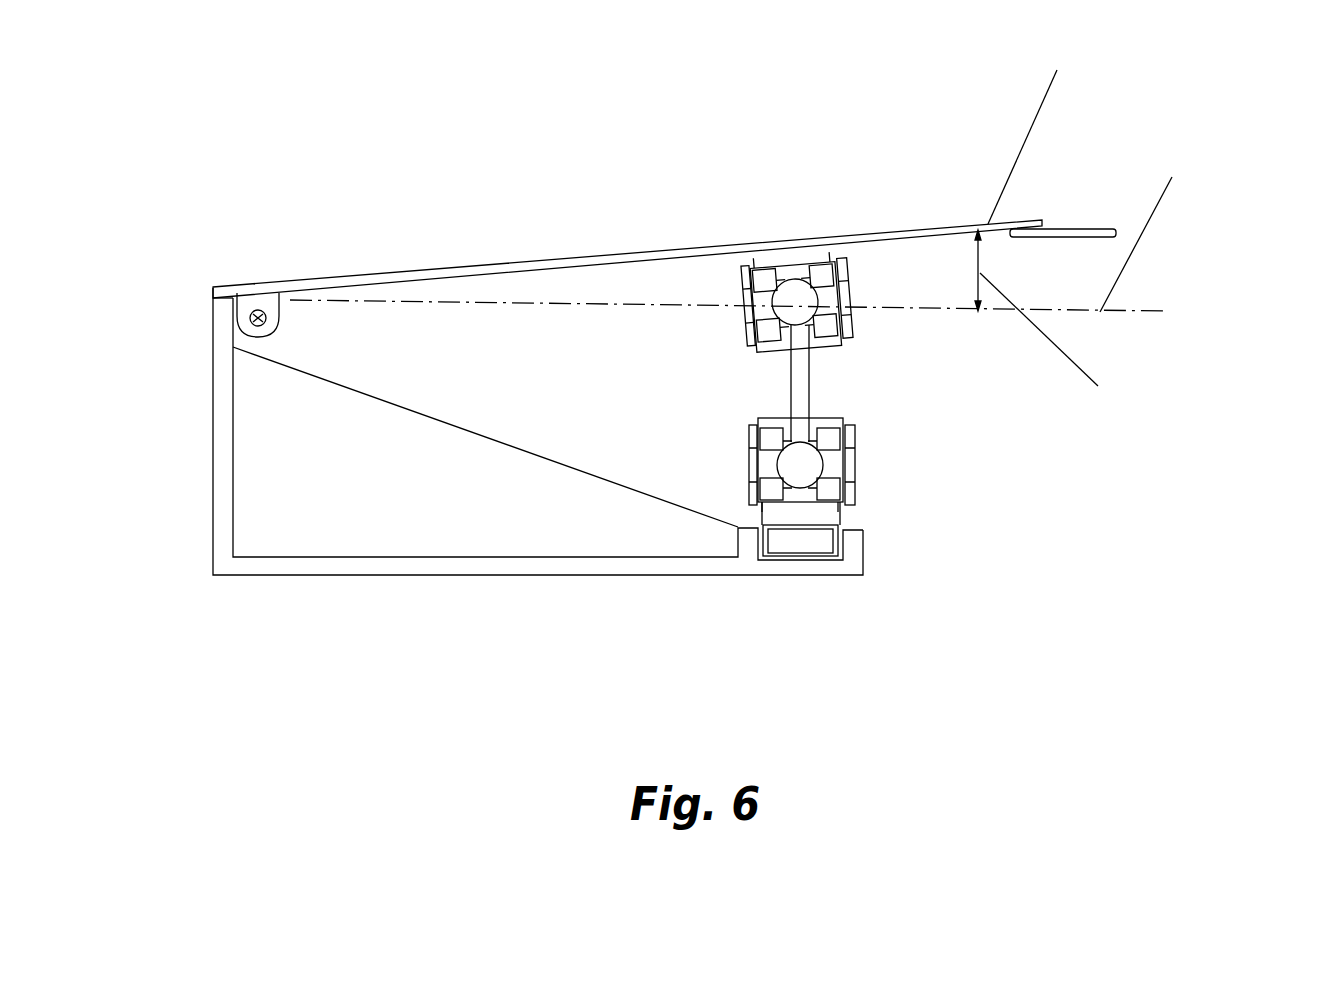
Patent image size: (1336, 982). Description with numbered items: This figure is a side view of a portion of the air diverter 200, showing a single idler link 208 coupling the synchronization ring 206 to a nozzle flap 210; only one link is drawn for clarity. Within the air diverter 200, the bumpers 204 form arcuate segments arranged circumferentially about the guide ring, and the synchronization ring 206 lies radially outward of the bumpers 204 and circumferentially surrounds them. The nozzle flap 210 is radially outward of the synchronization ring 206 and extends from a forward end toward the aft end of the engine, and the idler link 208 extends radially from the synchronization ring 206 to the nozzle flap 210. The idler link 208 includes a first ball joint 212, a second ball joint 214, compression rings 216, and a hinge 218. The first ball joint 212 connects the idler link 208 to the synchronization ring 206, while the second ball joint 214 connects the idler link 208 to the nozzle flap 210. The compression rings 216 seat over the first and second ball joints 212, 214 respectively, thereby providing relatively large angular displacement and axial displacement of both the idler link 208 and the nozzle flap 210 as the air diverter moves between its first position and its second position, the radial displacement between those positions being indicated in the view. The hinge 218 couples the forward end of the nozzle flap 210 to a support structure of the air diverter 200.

The air diverter 200 is at (306, 123).
The bumpers 204 is at (783, 543).
The synchronization ring 206 is at (832, 515).
The idler link 208 is at (800, 380).
The nozzle flap 210 is at (515, 262).
The first ball joint 212 is at (810, 466).
The second ball joint 214 is at (794, 300).
The compression rings 216 is at (763, 265).
The hinge 218 is at (258, 311).